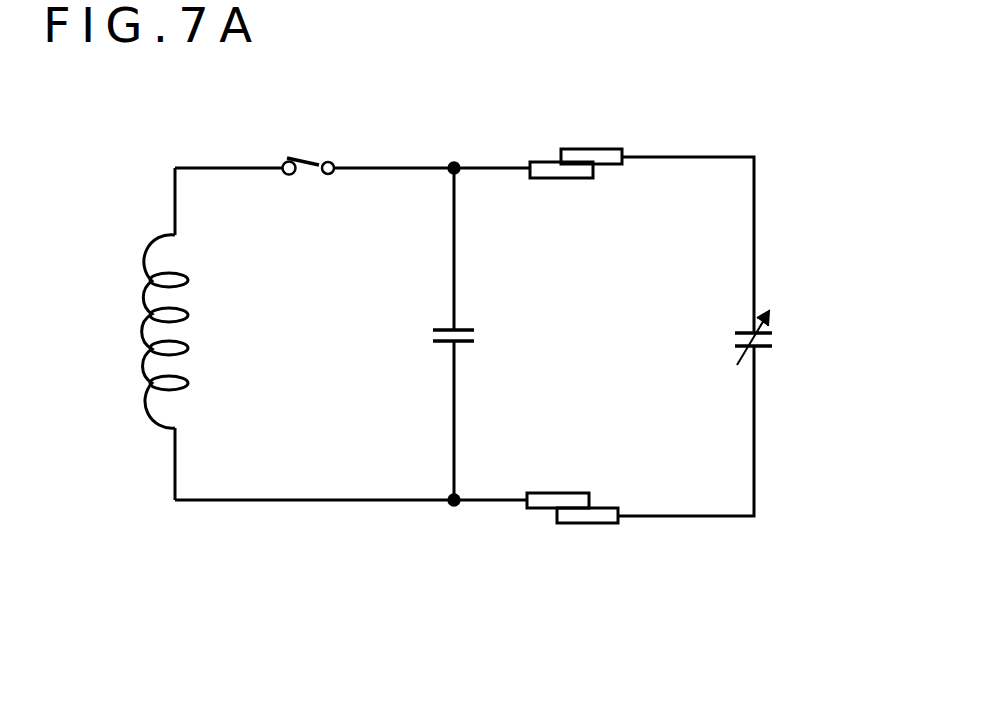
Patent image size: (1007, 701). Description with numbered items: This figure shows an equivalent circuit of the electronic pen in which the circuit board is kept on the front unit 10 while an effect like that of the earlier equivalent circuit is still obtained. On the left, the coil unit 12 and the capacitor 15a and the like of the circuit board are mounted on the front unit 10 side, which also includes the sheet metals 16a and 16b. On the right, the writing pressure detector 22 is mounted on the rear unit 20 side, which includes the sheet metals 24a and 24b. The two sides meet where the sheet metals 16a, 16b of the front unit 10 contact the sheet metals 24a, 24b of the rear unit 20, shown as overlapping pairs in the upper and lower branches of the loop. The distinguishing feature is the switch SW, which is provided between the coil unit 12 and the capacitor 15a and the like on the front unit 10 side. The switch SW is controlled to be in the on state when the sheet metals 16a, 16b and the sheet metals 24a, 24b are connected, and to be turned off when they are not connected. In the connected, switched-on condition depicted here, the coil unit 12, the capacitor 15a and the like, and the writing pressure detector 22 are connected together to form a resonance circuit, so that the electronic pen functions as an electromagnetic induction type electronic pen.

The front unit 10 is at (353, 514).
The coil unit 12 is at (137, 321).
The switch SW is at (305, 176).
The capacitor 15a is at (431, 336).
The sheet metal 16a is at (558, 181).
The sheet metal 16b is at (552, 492).
The sheet metal 24a is at (587, 148).
The sheet metal 24b is at (577, 525).
The rear unit 20 is at (681, 529).
The writing pressure detector 22 is at (776, 340).